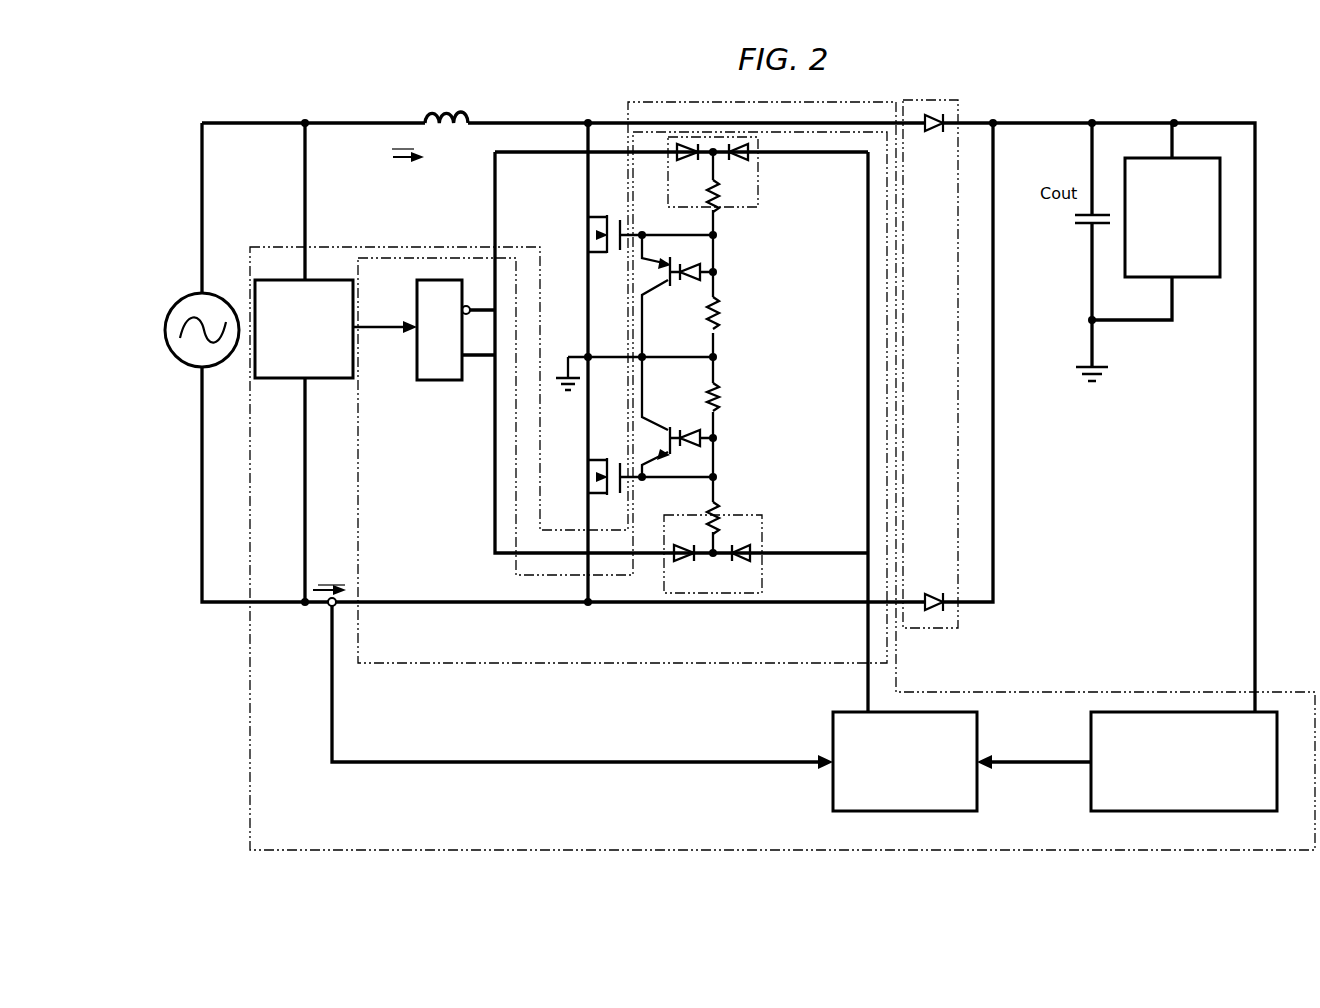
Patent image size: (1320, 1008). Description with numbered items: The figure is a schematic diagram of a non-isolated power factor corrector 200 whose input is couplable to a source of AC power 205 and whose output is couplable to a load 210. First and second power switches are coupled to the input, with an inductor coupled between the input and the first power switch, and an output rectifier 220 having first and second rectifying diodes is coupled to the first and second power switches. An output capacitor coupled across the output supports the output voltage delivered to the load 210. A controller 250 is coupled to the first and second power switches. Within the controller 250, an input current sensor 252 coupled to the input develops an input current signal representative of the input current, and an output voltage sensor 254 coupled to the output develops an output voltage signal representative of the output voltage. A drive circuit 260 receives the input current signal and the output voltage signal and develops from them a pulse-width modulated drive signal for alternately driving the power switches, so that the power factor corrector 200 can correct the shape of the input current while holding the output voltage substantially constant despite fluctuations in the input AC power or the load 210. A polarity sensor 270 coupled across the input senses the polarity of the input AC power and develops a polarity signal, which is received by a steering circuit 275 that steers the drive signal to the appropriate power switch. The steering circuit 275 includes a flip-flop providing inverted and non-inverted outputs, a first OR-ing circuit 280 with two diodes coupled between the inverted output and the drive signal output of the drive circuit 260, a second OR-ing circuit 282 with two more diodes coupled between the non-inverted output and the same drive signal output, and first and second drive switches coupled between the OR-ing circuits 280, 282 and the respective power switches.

The non-isolated power factor corrector 200 is at (1067, 74).
The source of AC power 205 is at (202, 290).
The load 210 is at (1196, 280).
The output rectifier 220 is at (958, 110).
The controller 250 is at (472, 851).
The input current sensor 252 is at (330, 607).
The output voltage sensor 254 is at (1090, 800).
The drive circuit 260 is at (832, 800).
The polarity sensor 270 is at (327, 380).
The steering circuit 275 is at (810, 357).
The first OR-ing circuit 280 is at (758, 207).
The second OR-ing circuit 282 is at (745, 515).